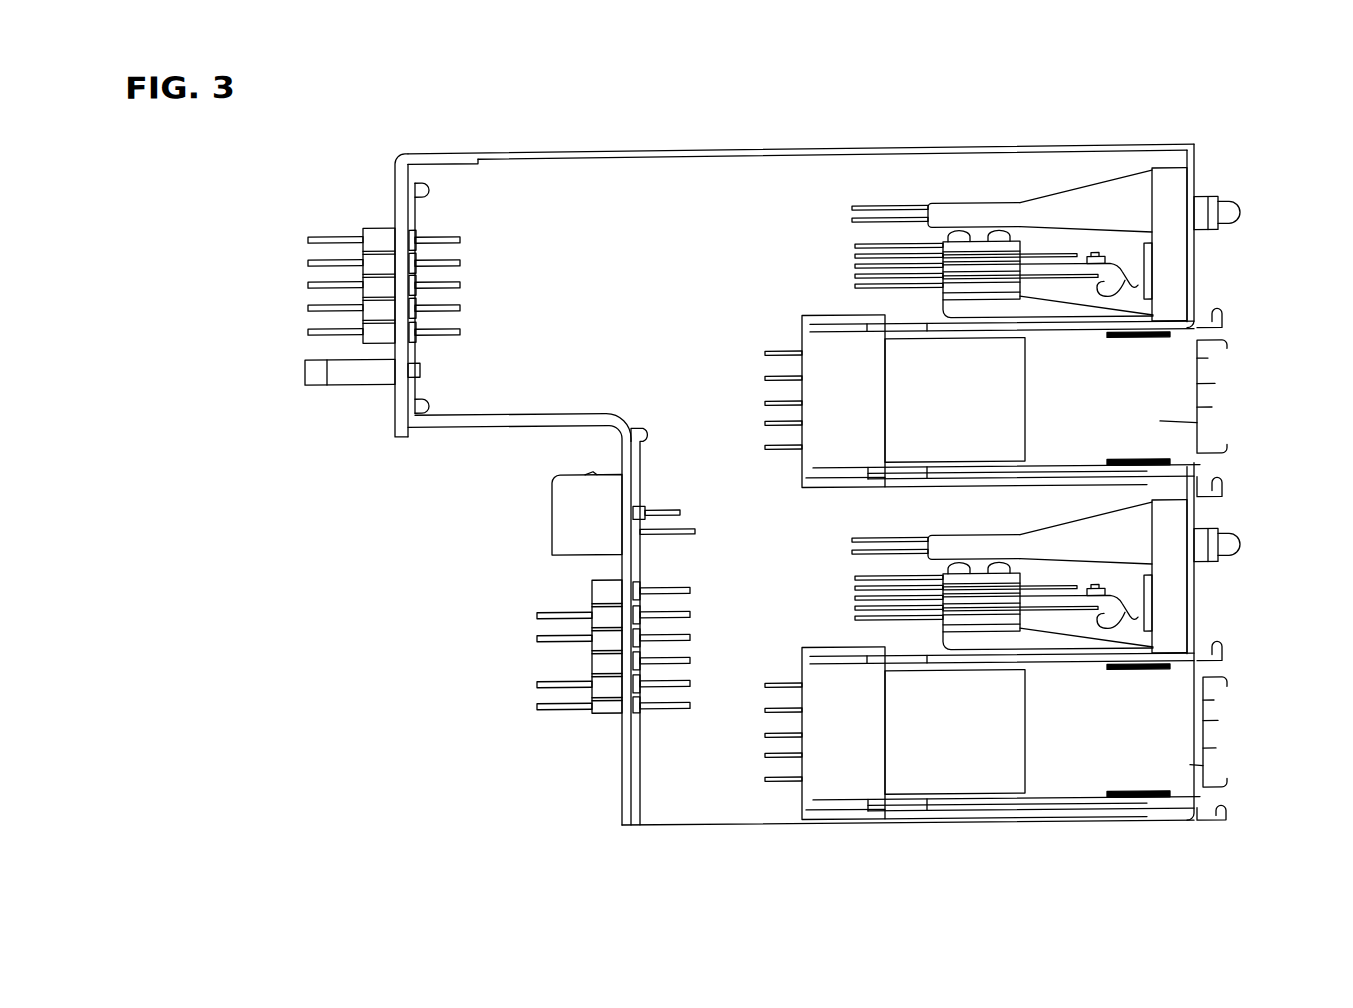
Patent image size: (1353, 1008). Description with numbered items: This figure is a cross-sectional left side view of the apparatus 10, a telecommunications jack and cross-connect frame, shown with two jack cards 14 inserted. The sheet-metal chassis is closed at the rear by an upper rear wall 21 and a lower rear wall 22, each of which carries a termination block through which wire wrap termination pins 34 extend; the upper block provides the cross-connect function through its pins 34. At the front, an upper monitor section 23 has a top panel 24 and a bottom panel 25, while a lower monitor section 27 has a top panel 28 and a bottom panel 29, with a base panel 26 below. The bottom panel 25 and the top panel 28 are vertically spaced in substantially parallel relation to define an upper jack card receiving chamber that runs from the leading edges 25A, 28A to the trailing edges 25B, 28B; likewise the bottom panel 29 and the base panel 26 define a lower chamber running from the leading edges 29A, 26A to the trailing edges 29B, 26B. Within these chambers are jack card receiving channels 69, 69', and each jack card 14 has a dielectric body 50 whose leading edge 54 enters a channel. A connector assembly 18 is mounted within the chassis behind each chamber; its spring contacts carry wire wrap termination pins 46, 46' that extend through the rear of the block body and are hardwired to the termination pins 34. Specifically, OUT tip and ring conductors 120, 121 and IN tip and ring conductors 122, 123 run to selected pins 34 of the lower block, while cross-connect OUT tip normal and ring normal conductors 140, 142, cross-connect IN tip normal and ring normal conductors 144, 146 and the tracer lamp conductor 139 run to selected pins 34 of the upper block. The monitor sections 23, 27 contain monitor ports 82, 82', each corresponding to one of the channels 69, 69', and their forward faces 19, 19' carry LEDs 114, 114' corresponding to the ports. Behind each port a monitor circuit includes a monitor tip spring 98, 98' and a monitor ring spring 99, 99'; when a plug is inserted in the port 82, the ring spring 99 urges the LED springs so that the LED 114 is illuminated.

The apparatus 10 is at (727, 126).
The top panel 24 is at (935, 151).
The upper rear wall 21 is at (398, 188).
The lower rear wall 22 is at (628, 795).
The upper monitor section 23 is at (1206, 161).
The forward face 19 is at (1242, 225).
The forward face 19' is at (1230, 641).
The LED 114 is at (1270, 196).
The LED 114' is at (1268, 544).
The monitor ring spring 99 is at (1092, 265).
The second spring contact 99' is at (1125, 597).
The monitor tip spring 98 is at (1092, 284).
The second lead 98' is at (1124, 610).
The monitor port 82 is at (1083, 244).
The monitor port 82' is at (1075, 576).
The wire wrap termination pins 34 is at (537, 705).
The tracer lamp conductor 139 is at (458, 236).
The cross-connect OUT tip normal conductor 140 is at (458, 259).
The cross-connect OUT ring normal conductor 142 is at (458, 282).
The cross-connect IN tip normal conductor 144 is at (458, 305).
The cross-connect IN ring normal conductor 146 is at (458, 329).
The OUT tip conductor 120 is at (667, 611).
The OUT ring conductor 121 is at (667, 634).
The IN tip conductor 122 is at (668, 685).
The IN ring conductor 123 is at (667, 708).
The bottom panel 25 is at (906, 324).
The leading edge 25A is at (1198, 331).
The trailing edge 25B is at (806, 320).
The top panel 28 is at (904, 482).
The leading edge 28A is at (1200, 468).
The trailing edge 28B is at (806, 470).
The base panel 26 is at (907, 805).
The leading edge 26A is at (1200, 803).
The trailing edge 26B is at (806, 802).
The bottom panel 29 is at (907, 657).
The leading edge 29A is at (1198, 664).
The trailing edge 29B is at (806, 659).
The wire wrap termination pins 46 is at (741, 400).
The second signal contacts 46' is at (748, 739).
The connector assembly 18 is at (803, 494).
The jack card 14 is at (1210, 366).
The jack card receiving channel 69 is at (1268, 387).
The jack card receiving channel 69' is at (1277, 729).
The leading edge 54 is at (1200, 410).
The dielectric body 50 is at (1160, 424).
The lower monitor section 27 is at (1218, 499).